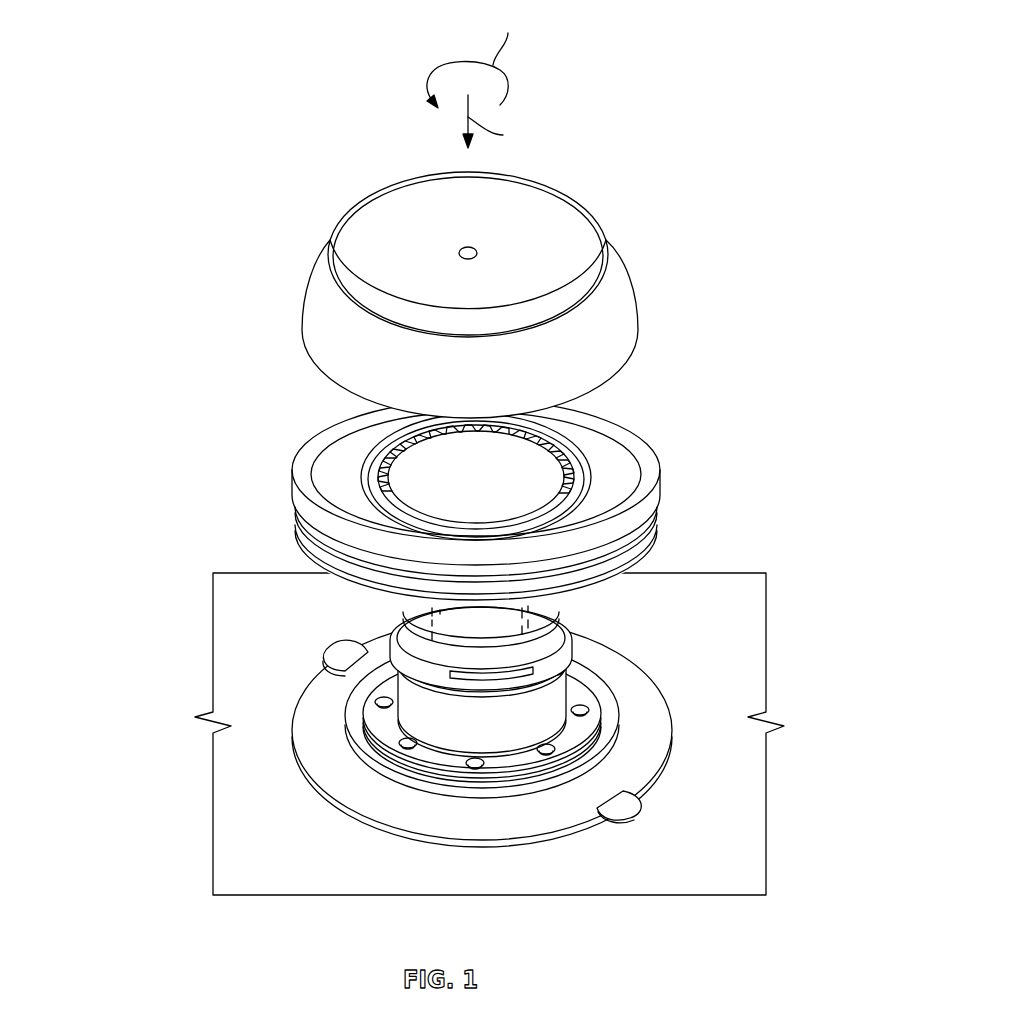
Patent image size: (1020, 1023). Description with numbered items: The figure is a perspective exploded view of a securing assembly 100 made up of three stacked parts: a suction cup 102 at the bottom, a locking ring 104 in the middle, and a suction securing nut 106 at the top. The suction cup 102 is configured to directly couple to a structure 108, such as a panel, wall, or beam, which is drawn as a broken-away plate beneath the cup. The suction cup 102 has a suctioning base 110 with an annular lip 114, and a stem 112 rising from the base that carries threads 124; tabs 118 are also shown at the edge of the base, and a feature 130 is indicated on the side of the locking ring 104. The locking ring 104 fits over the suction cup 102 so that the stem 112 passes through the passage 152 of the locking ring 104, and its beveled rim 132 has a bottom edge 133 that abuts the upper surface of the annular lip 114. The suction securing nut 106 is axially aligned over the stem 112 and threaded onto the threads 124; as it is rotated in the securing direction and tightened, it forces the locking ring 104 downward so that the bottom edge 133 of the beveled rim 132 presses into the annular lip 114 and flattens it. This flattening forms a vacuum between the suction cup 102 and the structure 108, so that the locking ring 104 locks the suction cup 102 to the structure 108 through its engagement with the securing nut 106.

The securing assembly 100 is at (170, 169).
The suction cup 102 is at (508, 744).
The locking ring 104 is at (521, 493).
The suction securing nut 106 is at (590, 330).
The structure 108 is at (713, 884).
The suctioning base 110 is at (652, 765).
The stem 112 is at (544, 744).
The annular lip 114 is at (643, 705).
The tabs 118 is at (633, 808).
The threads 124 is at (503, 692).
The outer wall of ring 130 is at (657, 507).
The beveled rim 132 is at (632, 553).
The bottom edge 133 is at (577, 589).
The passage 152 is at (517, 480).